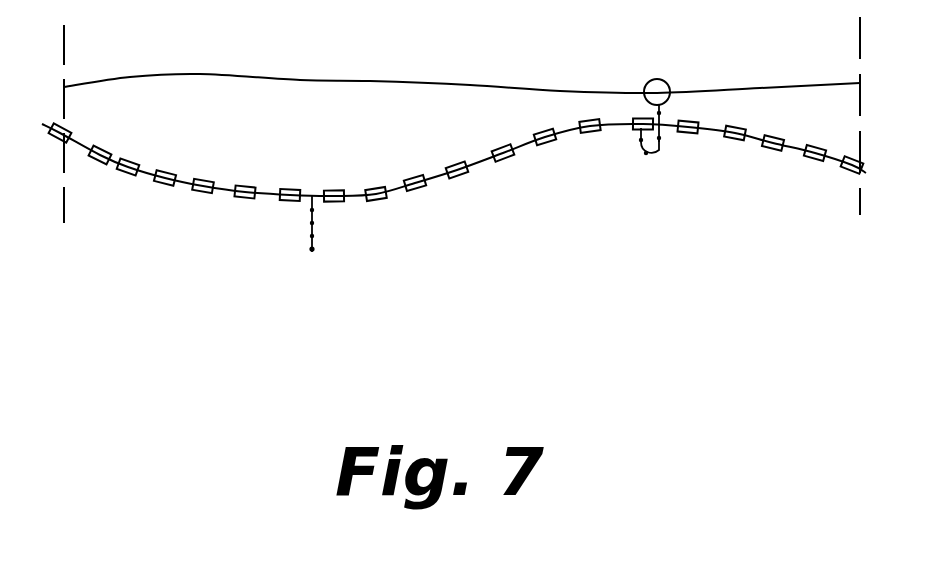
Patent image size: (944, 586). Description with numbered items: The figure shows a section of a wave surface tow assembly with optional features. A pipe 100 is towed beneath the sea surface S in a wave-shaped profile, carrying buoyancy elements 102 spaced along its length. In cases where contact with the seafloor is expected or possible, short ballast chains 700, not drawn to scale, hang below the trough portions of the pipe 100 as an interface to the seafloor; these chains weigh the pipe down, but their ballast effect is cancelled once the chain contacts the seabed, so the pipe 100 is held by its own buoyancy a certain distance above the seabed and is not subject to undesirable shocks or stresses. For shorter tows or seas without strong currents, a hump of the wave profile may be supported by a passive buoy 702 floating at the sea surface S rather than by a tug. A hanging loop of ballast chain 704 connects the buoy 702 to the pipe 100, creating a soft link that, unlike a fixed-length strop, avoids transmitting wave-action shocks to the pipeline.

The sea surface S is at (370, 81).
The pipe 100 is at (184, 181).
The buoyancy elements 102 is at (244, 187).
The ballast chains 700 is at (311, 230).
The passive buoy 702 is at (667, 83).
The hanging loop of ballast chain 704 is at (652, 155).